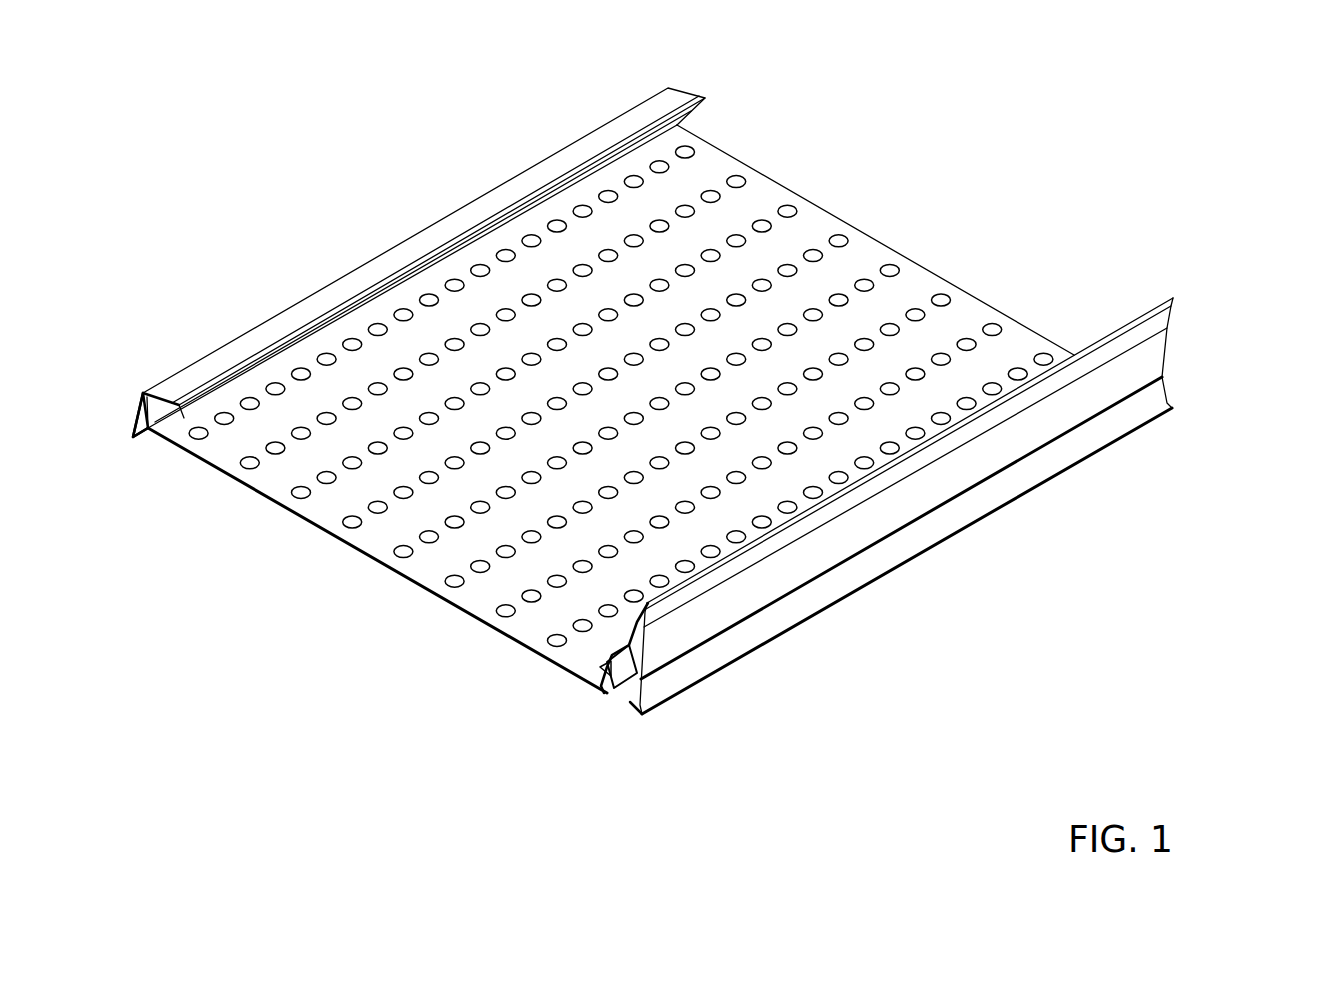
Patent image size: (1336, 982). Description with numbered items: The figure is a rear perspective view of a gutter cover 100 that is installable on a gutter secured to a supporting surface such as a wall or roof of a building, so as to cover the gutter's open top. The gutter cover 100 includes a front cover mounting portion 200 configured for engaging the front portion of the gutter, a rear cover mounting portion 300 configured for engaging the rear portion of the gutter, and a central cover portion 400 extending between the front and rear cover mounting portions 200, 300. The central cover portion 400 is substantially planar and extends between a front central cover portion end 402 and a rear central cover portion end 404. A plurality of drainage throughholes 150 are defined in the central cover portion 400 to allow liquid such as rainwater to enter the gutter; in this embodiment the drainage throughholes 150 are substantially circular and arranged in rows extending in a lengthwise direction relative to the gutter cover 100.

The gutter cover 100 is at (308, 155).
The drainage throughholes 150 is at (838, 239).
The front cover mounting portion 200 is at (601, 106).
The rear cover mounting portion 300 is at (1188, 347).
The central cover portion 400 is at (883, 222).
The front central cover portion end 402 is at (153, 438).
The rear central cover portion end 404 is at (603, 697).